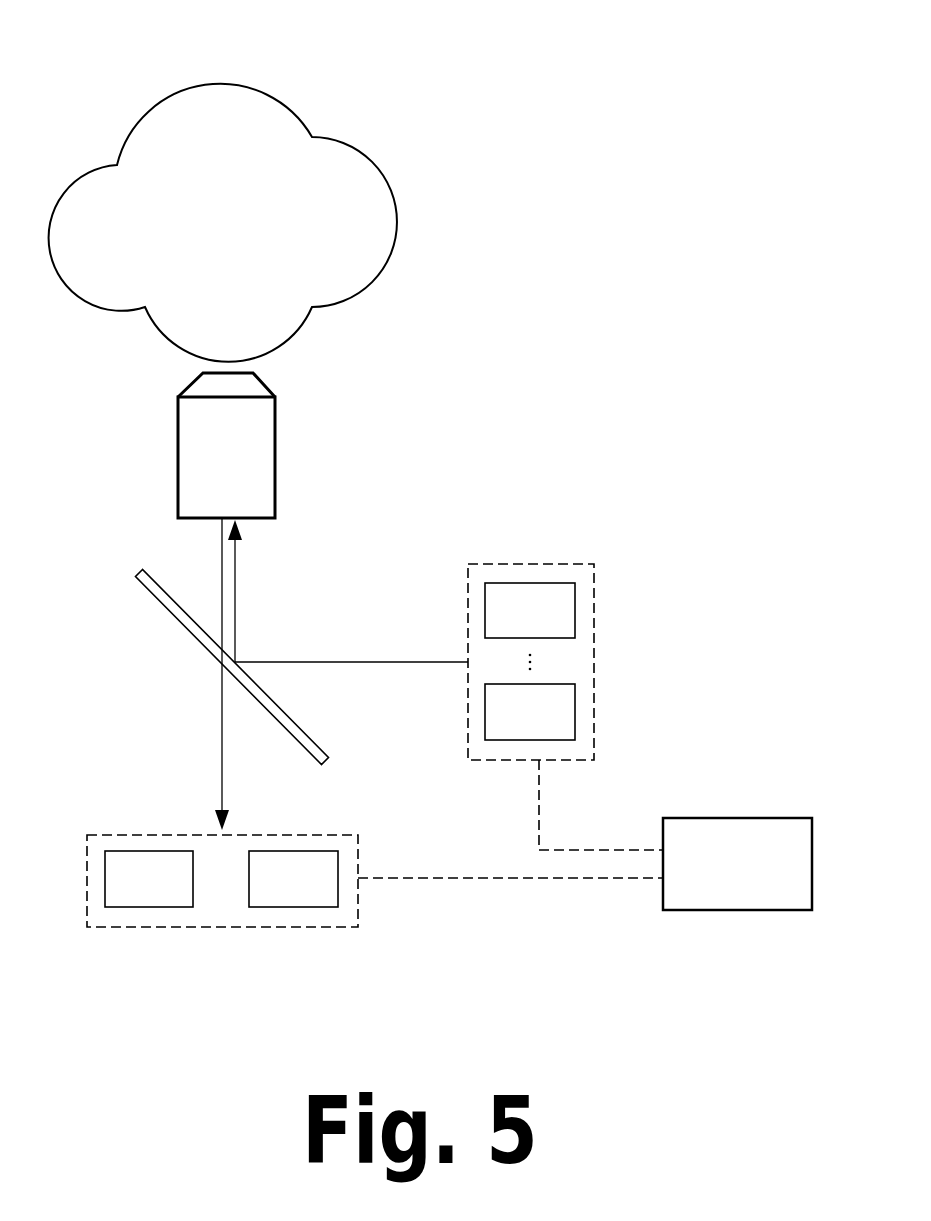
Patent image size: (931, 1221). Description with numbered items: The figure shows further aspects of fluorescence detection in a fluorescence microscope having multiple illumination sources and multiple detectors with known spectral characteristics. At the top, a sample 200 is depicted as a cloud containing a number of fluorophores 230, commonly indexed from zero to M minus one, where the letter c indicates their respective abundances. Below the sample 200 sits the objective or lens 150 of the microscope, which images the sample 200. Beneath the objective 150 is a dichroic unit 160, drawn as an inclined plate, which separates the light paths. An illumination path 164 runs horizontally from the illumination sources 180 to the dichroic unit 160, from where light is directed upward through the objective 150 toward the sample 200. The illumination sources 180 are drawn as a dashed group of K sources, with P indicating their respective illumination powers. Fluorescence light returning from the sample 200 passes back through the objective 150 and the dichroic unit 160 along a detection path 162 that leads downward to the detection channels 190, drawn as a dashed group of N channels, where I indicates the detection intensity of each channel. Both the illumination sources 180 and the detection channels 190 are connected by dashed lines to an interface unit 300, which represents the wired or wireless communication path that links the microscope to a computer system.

The objective 150 is at (177, 457).
The dichroic unit 160 is at (183, 630).
The detection path 162 is at (218, 752).
The illumination path 164 is at (323, 662).
The illumination sources 180 is at (578, 658).
The detection channels 190 is at (227, 920).
The sample 200 is at (330, 118).
The fluorophores 230 is at (201, 188).
The interface unit 300 is at (765, 881).